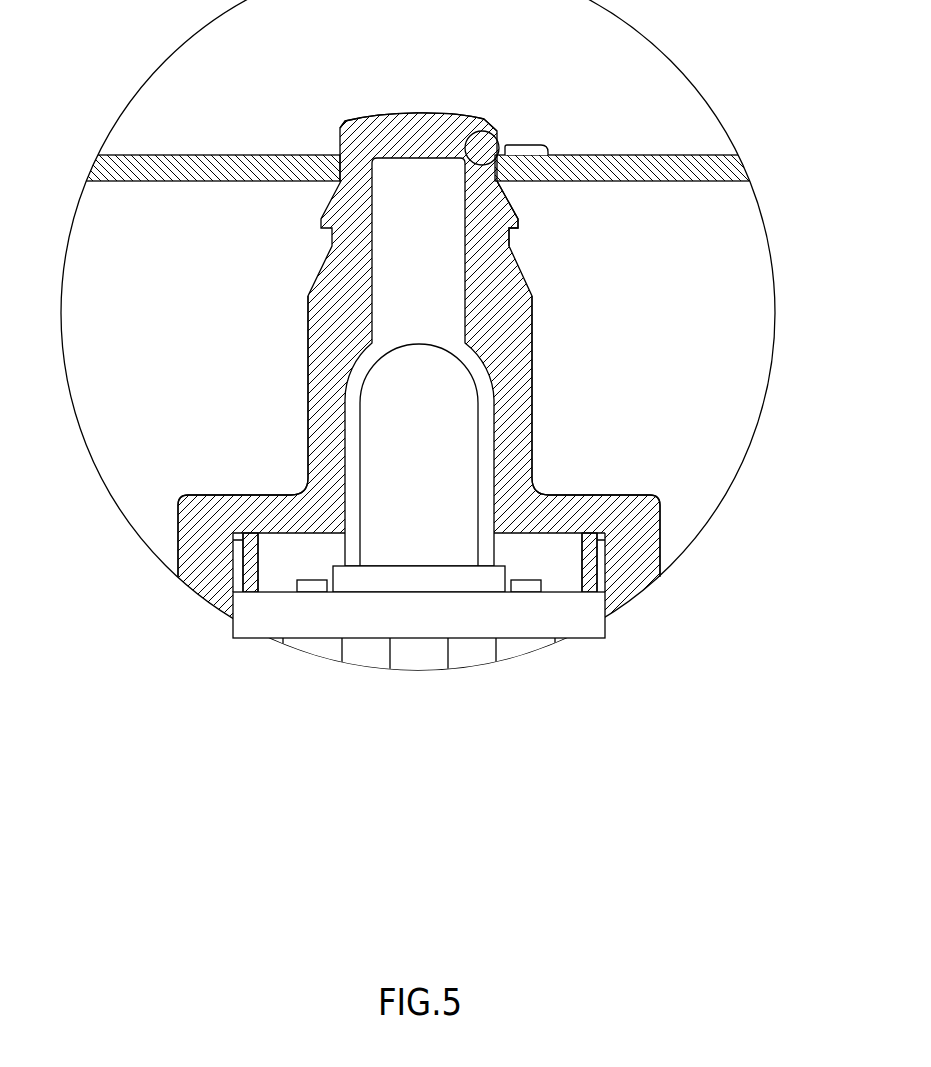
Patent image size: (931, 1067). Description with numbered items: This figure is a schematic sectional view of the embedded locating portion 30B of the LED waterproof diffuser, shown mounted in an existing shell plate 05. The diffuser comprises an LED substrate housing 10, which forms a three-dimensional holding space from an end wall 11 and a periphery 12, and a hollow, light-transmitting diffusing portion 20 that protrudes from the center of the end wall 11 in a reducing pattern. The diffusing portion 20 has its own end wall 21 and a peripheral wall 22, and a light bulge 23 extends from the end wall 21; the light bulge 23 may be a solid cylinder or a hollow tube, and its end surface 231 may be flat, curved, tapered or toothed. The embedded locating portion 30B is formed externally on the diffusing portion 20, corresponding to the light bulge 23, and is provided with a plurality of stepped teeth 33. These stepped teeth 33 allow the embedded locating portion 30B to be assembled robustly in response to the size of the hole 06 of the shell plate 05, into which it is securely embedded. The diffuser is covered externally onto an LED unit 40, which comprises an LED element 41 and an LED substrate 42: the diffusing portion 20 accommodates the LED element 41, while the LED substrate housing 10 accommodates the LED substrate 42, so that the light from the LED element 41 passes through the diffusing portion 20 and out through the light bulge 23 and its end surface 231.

The shell plate 05 is at (152, 150).
The hole 06 is at (500, 134).
The LED substrate housing 10 is at (338, 579).
The end wall 11 is at (232, 500).
The periphery 12 is at (178, 568).
The diffusing portion 20 is at (330, 362).
The end wall 21 is at (360, 353).
The peripheral wall 22 is at (323, 425).
The light bulge 23 is at (327, 263).
The end surface 231 is at (430, 113).
The embedded locating portion 30B is at (598, 224).
The stepped teeth 33 is at (548, 157).
The LED unit 40 is at (527, 574).
The LED element 41 is at (458, 480).
The LED substrate 42 is at (570, 613).